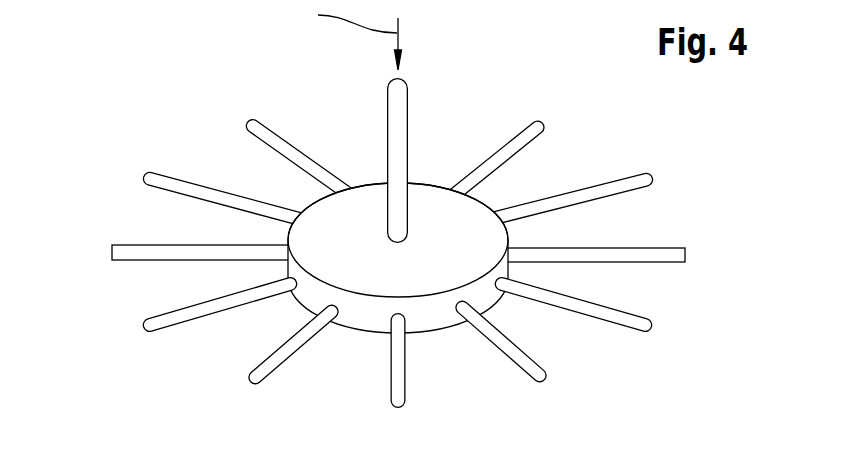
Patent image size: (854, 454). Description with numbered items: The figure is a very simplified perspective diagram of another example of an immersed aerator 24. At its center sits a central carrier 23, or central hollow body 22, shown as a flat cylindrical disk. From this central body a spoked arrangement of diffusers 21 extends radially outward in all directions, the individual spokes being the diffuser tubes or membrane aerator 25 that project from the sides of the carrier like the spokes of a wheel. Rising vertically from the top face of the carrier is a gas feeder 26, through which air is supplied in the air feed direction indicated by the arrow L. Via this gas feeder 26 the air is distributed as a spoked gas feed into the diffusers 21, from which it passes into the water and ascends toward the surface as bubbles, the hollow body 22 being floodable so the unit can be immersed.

The diffuser 21 is at (505, 155).
The floodable hollow body 22 is at (480, 297).
The carrier 23 is at (460, 210).
The immersed aerator 24 is at (170, 119).
The diffuser tubes or membrane aerator 25 is at (213, 312).
The gas feed 26 is at (395, 147).